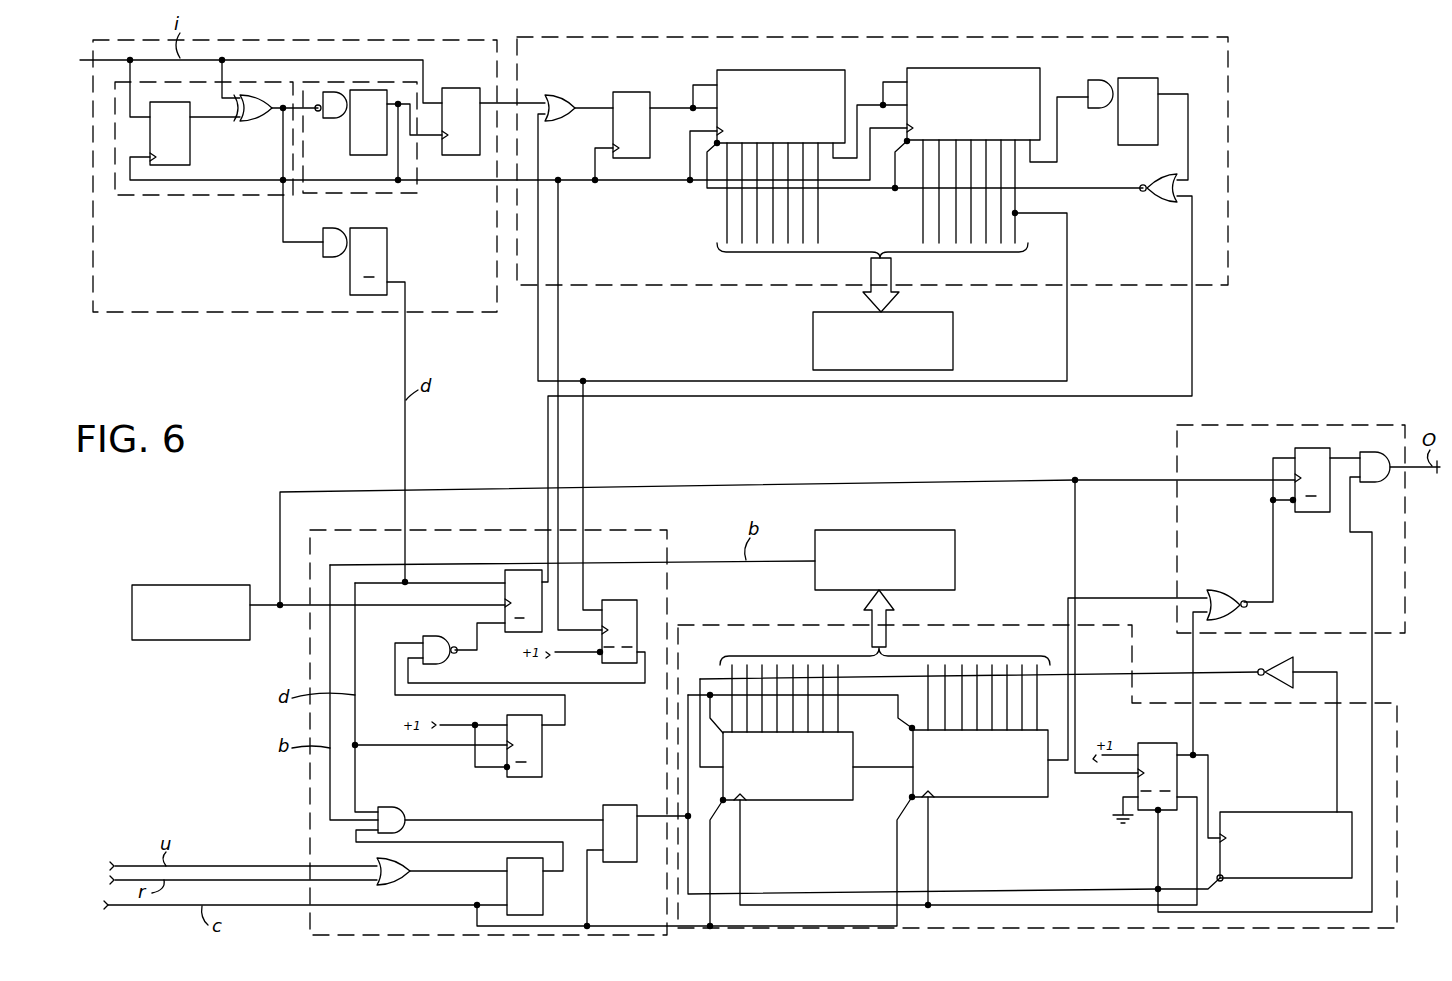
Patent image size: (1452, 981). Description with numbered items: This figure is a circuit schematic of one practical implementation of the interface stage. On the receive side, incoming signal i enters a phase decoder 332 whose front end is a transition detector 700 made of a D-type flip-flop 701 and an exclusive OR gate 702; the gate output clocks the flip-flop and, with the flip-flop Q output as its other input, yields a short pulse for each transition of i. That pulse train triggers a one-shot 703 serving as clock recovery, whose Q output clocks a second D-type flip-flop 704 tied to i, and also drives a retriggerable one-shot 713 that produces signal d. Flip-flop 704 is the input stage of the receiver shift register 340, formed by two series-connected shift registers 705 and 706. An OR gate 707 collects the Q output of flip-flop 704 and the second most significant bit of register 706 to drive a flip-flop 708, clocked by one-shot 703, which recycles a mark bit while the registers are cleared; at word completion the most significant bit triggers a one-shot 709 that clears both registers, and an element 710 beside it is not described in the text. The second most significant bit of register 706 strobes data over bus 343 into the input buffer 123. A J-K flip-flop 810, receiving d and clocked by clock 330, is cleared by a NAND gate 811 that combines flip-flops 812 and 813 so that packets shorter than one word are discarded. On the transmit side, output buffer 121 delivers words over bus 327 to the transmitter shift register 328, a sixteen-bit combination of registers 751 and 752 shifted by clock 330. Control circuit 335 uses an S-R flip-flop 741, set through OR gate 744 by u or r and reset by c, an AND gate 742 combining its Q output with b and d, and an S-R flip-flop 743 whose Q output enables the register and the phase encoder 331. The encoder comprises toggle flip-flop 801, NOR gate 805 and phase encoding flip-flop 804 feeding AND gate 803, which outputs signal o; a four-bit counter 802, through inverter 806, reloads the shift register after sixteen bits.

The output buffer 121 is at (955, 545).
The input buffer 123 is at (813, 334).
The parallel data bus 327 is at (892, 616).
The transmitter shift register 328 is at (1011, 626).
The clock 330 is at (197, 585).
The phase encoder 331 is at (1279, 426).
The phase decoder 332 is at (306, 40).
The transmitter control circuit 335 is at (308, 774).
The receiver shift register 340 is at (1036, 38).
The parallel data bus 343 is at (898, 278).
The transition detector 700 is at (208, 197).
The D-type flip-flop 701 is at (195, 163).
The exclusive OR gate 702 is at (262, 118).
The monostable multivibrator (one-shot) 703 is at (352, 146).
The D-type flip-flop 704 is at (460, 88).
The shift register 705 is at (790, 70).
The shift register 706 is at (975, 68).
The OR gate 707 is at (556, 94).
The flip-flop 708 is at (636, 92).
The one-shot 709 is at (1150, 78).
The NOR gate 710 is at (1160, 174).
The one-shot 713 is at (378, 230).
The S-R flip-flop 741 is at (507, 860).
The AND gate 742 is at (405, 806).
The S-R flip-flop 743 is at (620, 805).
The OR gate 744 is at (410, 880).
The shift register 751 is at (800, 804).
The shift register 752 is at (992, 802).
The J-K flip-flop 801 is at (1160, 730).
The 4-bit counter 802 is at (1272, 812).
The AND gate 803 is at (1368, 452).
The phase encoding flip-flop 804 is at (1290, 448).
The NOR gate 805 is at (1222, 590).
The inverter 806 is at (1283, 658).
The J-K flip-flop 810 is at (520, 570).
The NAND gate 811 is at (446, 628).
The J-K flip-flop 812 is at (630, 600).
The J-K flip-flop 813 is at (545, 760).